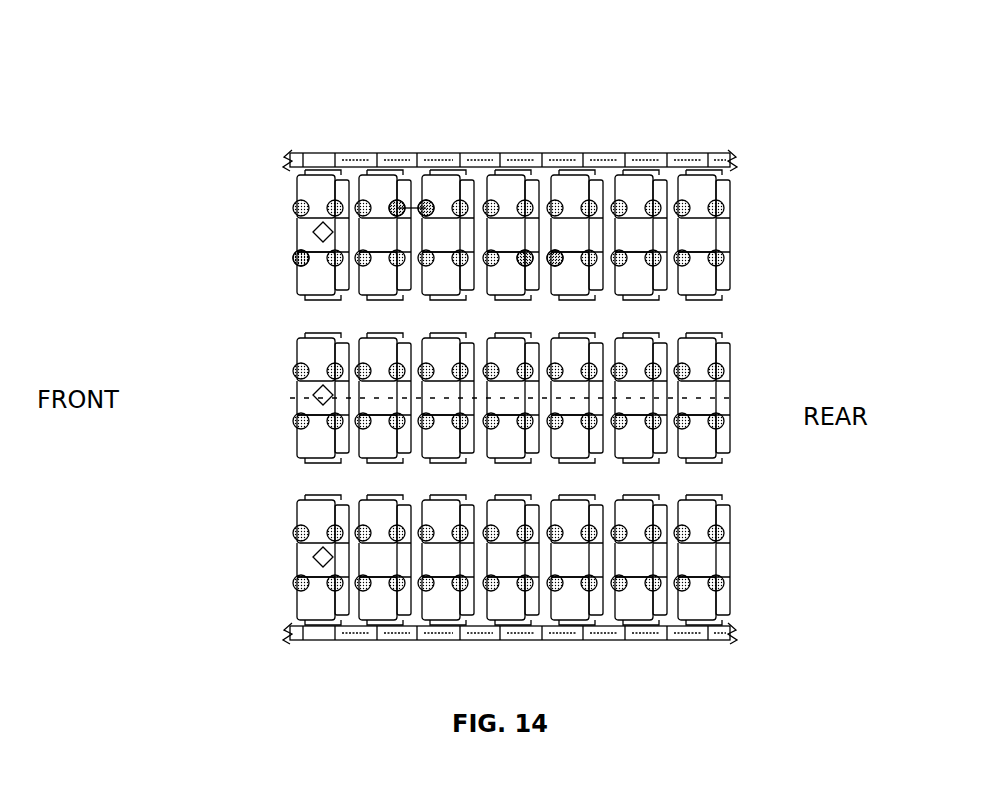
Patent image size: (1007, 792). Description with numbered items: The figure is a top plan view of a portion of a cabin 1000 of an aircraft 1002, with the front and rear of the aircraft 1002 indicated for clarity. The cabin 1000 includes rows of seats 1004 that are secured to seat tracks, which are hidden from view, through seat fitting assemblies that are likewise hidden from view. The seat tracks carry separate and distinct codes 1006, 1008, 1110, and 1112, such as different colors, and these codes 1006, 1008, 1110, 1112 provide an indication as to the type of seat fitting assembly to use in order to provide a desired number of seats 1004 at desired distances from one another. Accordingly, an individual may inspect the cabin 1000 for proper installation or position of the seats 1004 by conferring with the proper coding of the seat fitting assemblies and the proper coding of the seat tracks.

The cabin 1000 is at (296, 116).
The aircraft 1002 is at (511, 161).
The seats 1004 is at (325, 182).
The code 1006 is at (294, 261).
The code 1008 is at (410, 206).
The code 1110 is at (413, 208).
The code 1112 is at (552, 258).